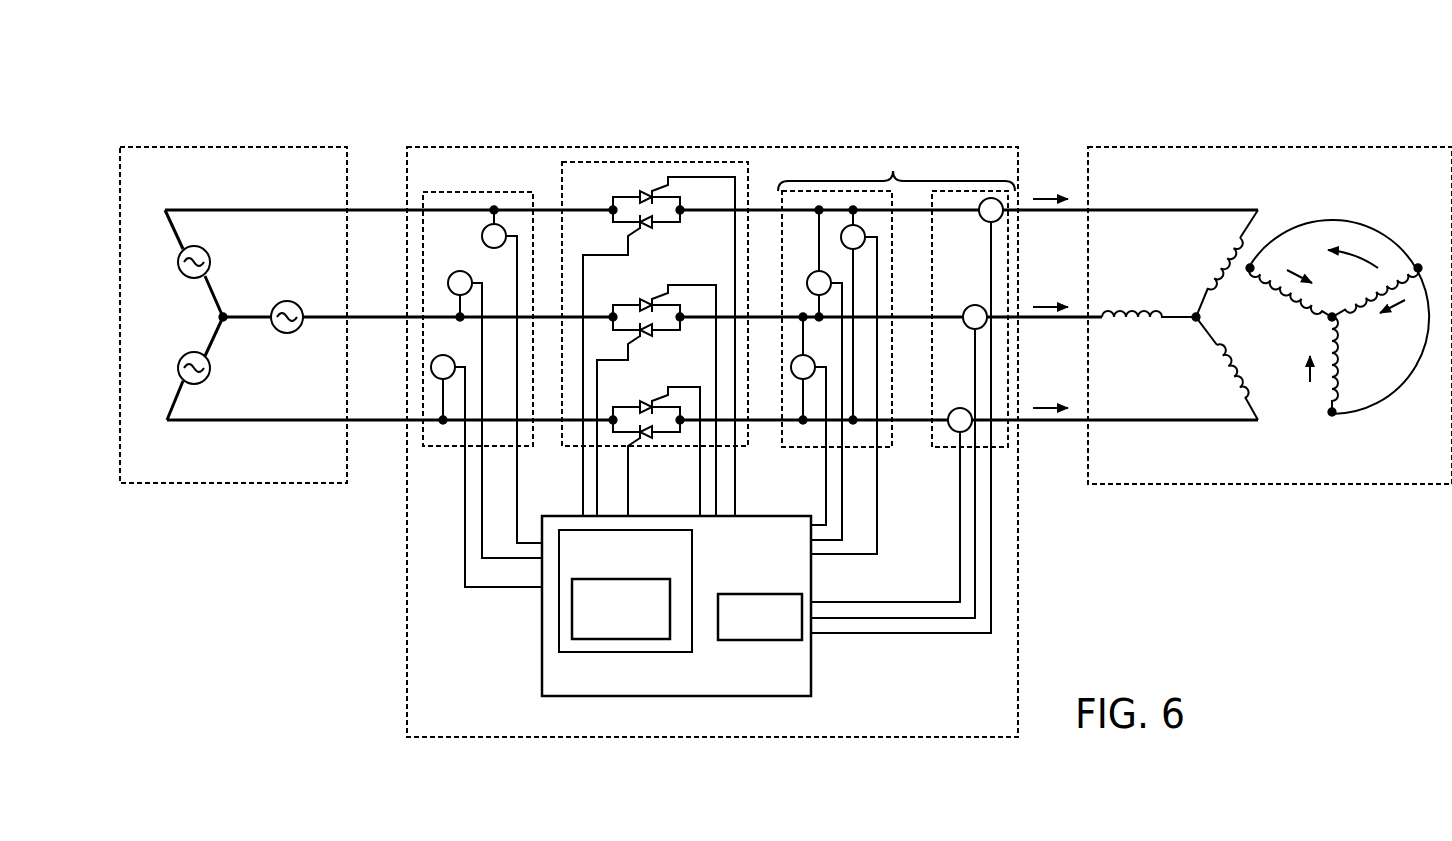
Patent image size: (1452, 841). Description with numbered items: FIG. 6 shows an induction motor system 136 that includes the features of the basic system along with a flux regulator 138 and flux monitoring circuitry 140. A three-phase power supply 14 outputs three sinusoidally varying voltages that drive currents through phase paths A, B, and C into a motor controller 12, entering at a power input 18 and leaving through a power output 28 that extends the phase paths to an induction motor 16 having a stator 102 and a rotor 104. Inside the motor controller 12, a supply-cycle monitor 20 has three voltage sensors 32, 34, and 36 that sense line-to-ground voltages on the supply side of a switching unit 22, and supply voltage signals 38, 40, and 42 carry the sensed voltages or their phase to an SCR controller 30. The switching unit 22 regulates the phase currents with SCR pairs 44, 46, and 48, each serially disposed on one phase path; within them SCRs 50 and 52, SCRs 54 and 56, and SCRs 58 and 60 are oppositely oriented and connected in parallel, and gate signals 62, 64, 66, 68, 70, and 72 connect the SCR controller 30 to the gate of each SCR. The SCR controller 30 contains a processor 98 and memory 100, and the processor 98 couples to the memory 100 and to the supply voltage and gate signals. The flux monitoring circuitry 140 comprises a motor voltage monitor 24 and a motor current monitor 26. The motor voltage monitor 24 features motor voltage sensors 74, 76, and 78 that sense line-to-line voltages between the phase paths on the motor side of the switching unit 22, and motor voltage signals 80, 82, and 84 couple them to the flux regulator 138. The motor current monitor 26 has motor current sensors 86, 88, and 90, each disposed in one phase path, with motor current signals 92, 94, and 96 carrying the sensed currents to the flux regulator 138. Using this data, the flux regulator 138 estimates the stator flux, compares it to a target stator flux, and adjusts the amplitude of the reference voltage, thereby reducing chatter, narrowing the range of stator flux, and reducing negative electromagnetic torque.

The induction motor system 136 is at (240, 66).
The power supply 14 is at (258, 148).
The motor controller 12 is at (432, 148).
The power input 18 is at (397, 432).
The power output 28 is at (1038, 456).
The supply-cycle monitor 20 is at (480, 192).
The voltage sensor 32 is at (506, 226).
The voltage sensor 34 is at (450, 275).
The voltage sensor 36 is at (434, 360).
The supply voltage signal 38 is at (513, 528).
The supply voltage signal 40 is at (512, 562).
The supply voltage signal 42 is at (533, 592).
The switching unit 22 is at (652, 162).
The SCR pair 44 is at (653, 342).
The SCR pair 46 is at (673, 398).
The SCR pair 48 is at (618, 440).
The SCR 50 is at (640, 198).
The SCR 52 is at (660, 224).
The SCR 54 is at (641, 306).
The SCR 56 is at (660, 333).
The SCR 58 is at (641, 408).
The SCR 60 is at (660, 434).
The gate signal 62 is at (737, 503).
The gate signal 64 is at (583, 482).
The gate signal 66 is at (717, 483).
The gate signal 68 is at (597, 490).
The gate signal 70 is at (736, 462).
The gate signal 72 is at (625, 456).
The motor voltage monitor 24 is at (815, 190).
The motor voltage sensor 74 is at (862, 228).
The motor voltage sensor 76 is at (826, 270).
The motor voltage sensor 78 is at (810, 359).
The motor voltage signal 80 is at (826, 556).
The motor voltage signal 82 is at (842, 532).
The motor voltage signal 84 is at (826, 480).
The flux monitoring circuitry 140 is at (893, 172).
The motor current monitor 26 is at (972, 191).
The motor current sensor 86 is at (985, 221).
The motor current sensor 88 is at (973, 305).
The motor current sensor 90 is at (950, 430).
The motor current signal 92 is at (902, 634).
The motor current signal 94 is at (975, 558).
The motor current signal 96 is at (958, 534).
The SCR controller 30 is at (679, 623).
The processor 98 is at (575, 655).
The flux regulator 138 is at (672, 600).
The memory 100 is at (748, 594).
The induction motor 16 is at (1240, 148).
The stator 102 is at (1130, 200).
The rotor 104 is at (1358, 216).